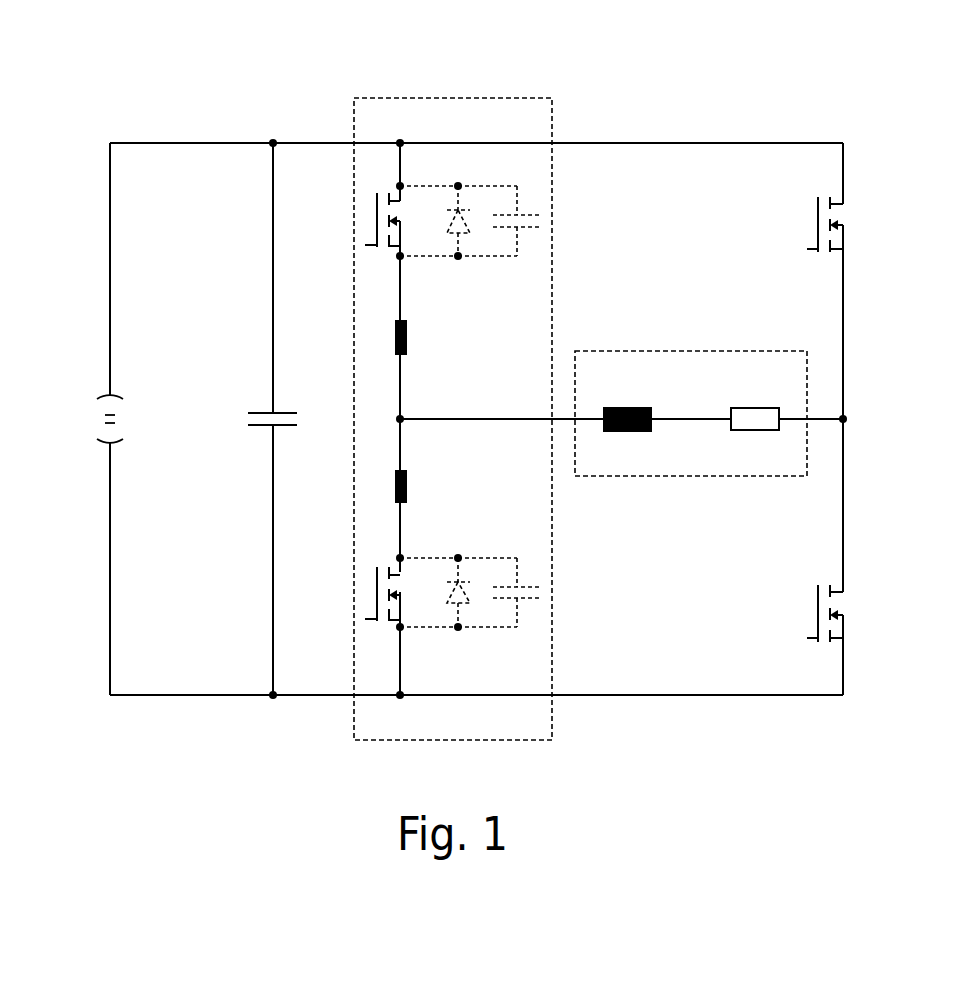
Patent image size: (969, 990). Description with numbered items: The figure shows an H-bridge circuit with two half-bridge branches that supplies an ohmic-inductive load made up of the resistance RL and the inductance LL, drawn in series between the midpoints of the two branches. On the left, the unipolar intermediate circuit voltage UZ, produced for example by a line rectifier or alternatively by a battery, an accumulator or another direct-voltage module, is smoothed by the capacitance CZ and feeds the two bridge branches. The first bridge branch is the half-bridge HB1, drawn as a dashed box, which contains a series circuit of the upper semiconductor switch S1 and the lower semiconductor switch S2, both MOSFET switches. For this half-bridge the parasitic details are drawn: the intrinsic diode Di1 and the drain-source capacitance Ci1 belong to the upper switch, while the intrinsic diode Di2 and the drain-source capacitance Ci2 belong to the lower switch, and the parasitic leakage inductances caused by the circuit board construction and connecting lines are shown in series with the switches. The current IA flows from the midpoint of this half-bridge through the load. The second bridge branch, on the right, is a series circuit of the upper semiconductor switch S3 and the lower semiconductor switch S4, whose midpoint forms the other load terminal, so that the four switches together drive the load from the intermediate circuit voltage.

The half-bridge HB1 is at (453, 393).
The unipolar intermediate circuit voltage UZ is at (87, 383).
The capacitance CZ is at (254, 419).
The upper semiconductor switch S1 is at (401, 231).
The lower semiconductor switch S2 is at (401, 624).
The upper semiconductor switch S3 is at (847, 224).
The lower semiconductor switch S4 is at (847, 613).
The intrinsic diode Di1 is at (440, 238).
The drain-source capacitance Ci1 is at (500, 240).
The intrinsic diode Di2 is at (437, 612).
The drain-source capacitance Ci2 is at (499, 614).
The output current IA is at (500, 408).
The inductive load LL is at (627, 396).
The ohmic load RL is at (755, 395).